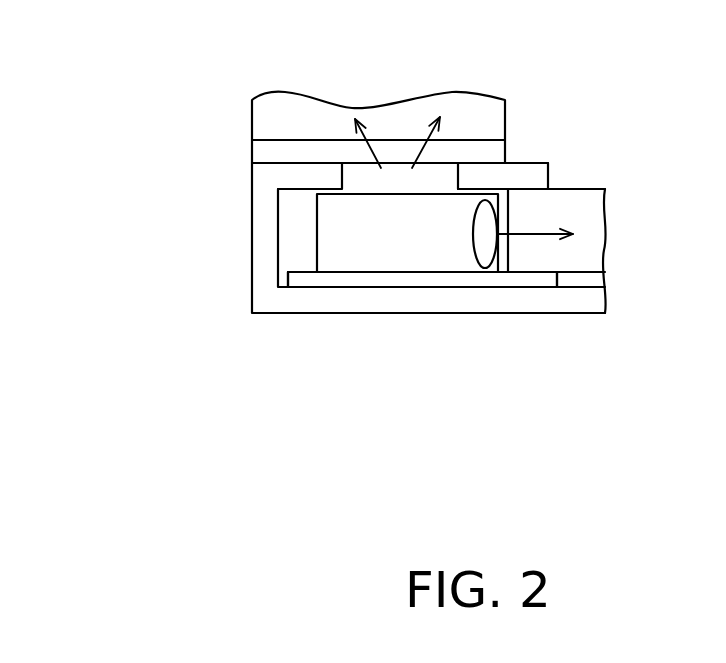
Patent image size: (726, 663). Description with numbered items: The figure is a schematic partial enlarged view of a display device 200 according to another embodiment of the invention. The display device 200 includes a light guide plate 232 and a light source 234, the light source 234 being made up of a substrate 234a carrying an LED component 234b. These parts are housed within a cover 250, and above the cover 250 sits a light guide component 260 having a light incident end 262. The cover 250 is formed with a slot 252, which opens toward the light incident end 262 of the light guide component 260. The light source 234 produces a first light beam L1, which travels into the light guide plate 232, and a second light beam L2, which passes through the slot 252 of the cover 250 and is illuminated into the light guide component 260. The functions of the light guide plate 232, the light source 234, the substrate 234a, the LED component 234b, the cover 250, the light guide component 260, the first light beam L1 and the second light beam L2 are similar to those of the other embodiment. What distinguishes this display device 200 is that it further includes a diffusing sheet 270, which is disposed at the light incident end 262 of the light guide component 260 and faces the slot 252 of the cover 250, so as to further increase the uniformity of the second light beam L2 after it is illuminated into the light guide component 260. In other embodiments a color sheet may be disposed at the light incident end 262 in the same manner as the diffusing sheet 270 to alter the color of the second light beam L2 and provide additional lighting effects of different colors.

The display device 200 is at (723, 348).
The light guide plate 232 is at (590, 240).
The light source 234 is at (472, 293).
The substrate 234a is at (403, 277).
The LED component 234b is at (345, 248).
The cover 250 is at (262, 232).
The slot 252 is at (445, 171).
The light guide component 260 is at (415, 107).
The light incident end 262 is at (378, 137).
The diffusing sheet 270 is at (292, 147).
The first light beam L1 is at (530, 232).
The second light beam L2 is at (453, 130).